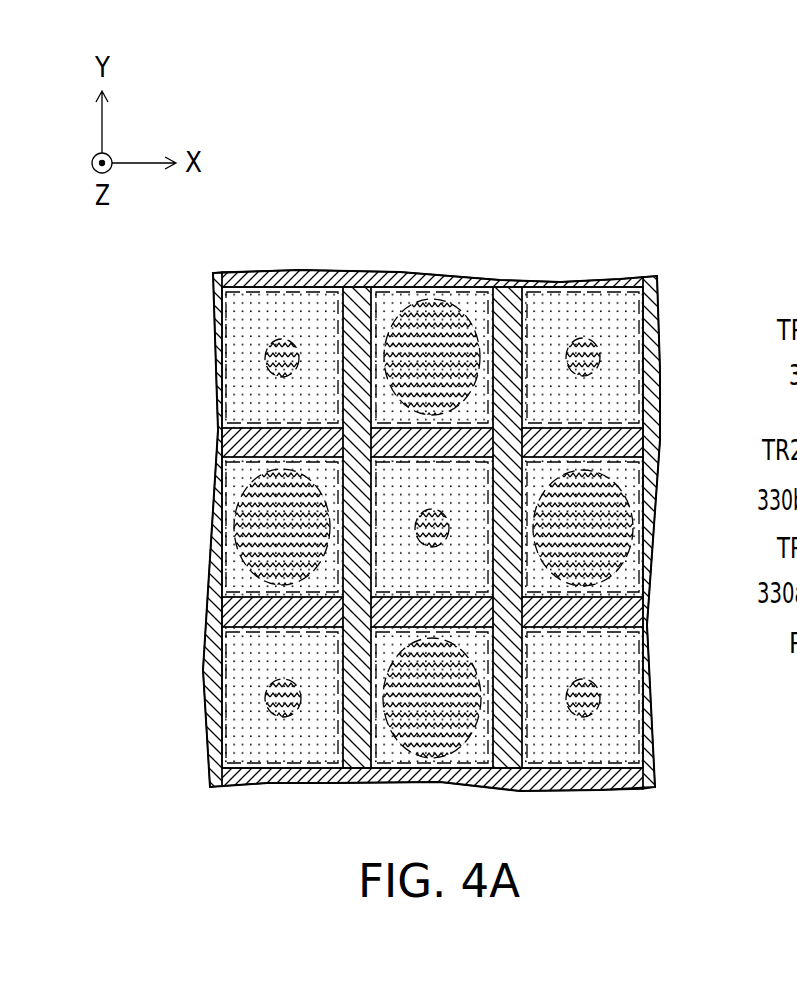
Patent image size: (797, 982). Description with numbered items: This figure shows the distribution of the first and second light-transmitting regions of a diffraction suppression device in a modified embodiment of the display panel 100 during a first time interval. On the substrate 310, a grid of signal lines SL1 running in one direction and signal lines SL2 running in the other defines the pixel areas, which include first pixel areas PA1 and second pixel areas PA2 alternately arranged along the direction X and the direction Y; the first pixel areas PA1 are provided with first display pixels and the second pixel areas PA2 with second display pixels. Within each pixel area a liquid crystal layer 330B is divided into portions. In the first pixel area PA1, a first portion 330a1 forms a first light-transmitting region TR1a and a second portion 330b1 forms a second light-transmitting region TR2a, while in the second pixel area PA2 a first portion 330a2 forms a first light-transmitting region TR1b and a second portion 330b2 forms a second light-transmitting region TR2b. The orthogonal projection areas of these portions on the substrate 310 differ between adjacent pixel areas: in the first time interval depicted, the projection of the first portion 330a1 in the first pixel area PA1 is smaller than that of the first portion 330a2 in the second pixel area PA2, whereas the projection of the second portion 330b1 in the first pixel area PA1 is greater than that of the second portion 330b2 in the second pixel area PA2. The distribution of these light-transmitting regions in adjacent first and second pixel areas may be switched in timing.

The substrate 310 is at (640, 278).
The display panel 100 is at (509, 477).
The signal lines SL1 is at (628, 441).
The signal lines SL2 is at (510, 290).
The liquid crystal layer 330B is at (355, 32).
The first portion 330a1 is at (266, 360).
The first portion 330a2 is at (262, 555).
The second portion 330b1 is at (297, 303).
The second portion 330b2 is at (240, 487).
The first pixel area PA1 is at (237, 301).
The second pixel area PA2 is at (214, 547).
The first light-transmitting region TR1a is at (205, 357).
The second light-transmitting region TR2a is at (247, 291).
The first light-transmitting region TR1b is at (207, 538).
The second light-transmitting region TR2b is at (208, 469).